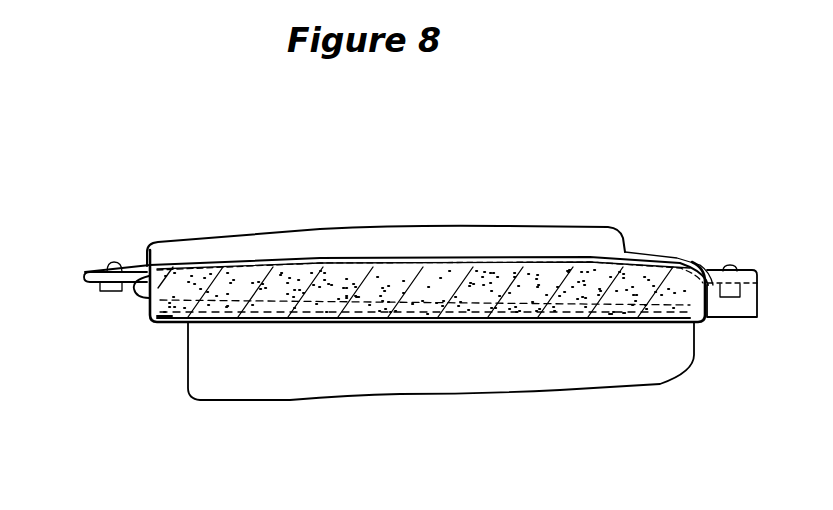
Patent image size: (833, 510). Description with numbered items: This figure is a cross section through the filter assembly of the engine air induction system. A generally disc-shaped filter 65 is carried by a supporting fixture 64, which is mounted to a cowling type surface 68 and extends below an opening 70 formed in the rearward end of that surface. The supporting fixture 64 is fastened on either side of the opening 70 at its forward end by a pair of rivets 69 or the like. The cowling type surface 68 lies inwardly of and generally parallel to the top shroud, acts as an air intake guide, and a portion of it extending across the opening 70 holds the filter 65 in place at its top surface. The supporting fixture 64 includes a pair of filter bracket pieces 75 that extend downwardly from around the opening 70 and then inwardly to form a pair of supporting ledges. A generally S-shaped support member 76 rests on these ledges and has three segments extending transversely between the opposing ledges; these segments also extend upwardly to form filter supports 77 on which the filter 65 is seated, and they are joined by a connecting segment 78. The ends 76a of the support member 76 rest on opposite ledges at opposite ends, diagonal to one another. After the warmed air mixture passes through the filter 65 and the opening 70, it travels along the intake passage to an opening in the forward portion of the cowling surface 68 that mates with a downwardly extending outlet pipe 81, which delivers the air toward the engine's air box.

The supporting fixture 64 is at (143, 265).
The filter 65 is at (350, 322).
The cowling type surface 68 is at (404, 258).
The rivets 69 is at (112, 292).
The opening 70 is at (262, 288).
The filter bracket pieces 75 is at (168, 322).
The S-shaped support member 76 is at (325, 300).
The ends of the support member 76a is at (670, 322).
The filter supports 77 is at (583, 305).
The connecting segment 78 is at (160, 321).
The outlet pipe 81 is at (457, 384).